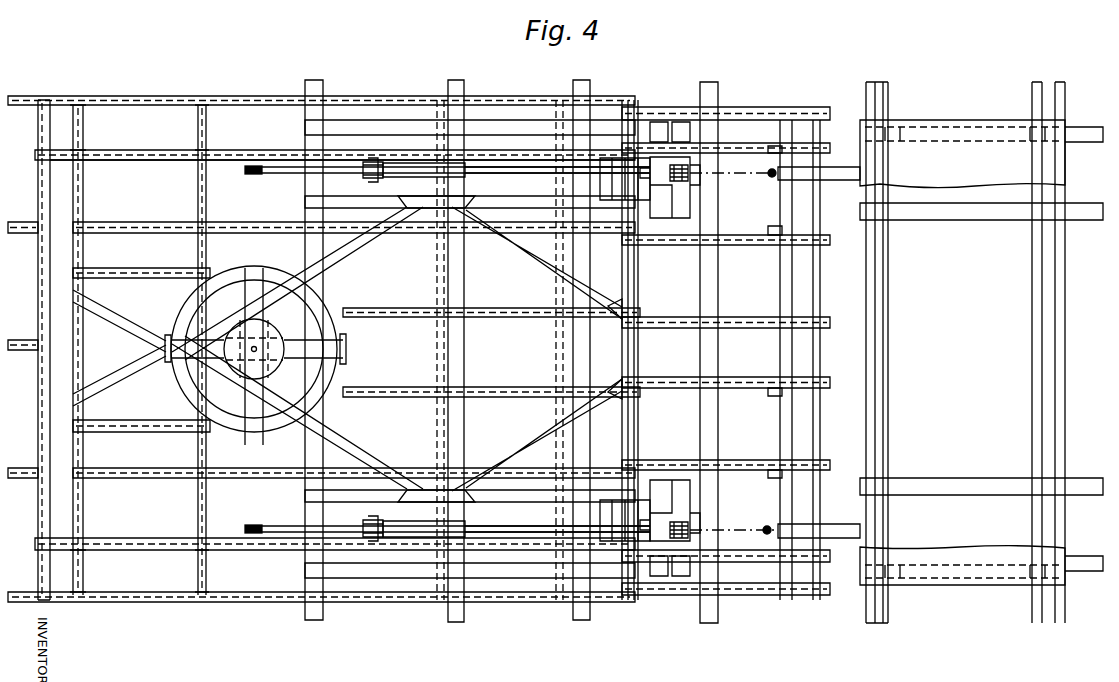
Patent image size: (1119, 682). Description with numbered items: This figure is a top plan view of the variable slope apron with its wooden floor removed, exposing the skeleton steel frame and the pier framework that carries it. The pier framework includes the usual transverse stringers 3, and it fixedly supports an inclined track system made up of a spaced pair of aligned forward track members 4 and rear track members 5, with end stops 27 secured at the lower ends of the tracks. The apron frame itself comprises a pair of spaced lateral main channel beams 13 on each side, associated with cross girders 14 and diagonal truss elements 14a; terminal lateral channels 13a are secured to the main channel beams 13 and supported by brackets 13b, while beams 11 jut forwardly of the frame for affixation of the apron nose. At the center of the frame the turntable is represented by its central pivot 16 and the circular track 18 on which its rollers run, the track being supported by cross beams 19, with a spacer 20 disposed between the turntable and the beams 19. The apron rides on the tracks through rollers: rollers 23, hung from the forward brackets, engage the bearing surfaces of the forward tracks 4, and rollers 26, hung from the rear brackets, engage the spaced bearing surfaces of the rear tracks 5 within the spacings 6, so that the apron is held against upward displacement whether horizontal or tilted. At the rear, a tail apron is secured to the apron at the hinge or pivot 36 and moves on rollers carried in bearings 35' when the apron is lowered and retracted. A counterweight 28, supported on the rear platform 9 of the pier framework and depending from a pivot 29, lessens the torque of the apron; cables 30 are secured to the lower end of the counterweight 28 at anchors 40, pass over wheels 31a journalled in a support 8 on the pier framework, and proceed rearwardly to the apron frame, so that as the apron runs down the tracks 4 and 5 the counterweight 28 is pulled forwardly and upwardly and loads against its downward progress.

The transverse stringers 3 is at (450, 615).
The forward track members 4 is at (285, 173).
The rear track members 5 is at (505, 170).
The spacings 6 is at (362, 495).
The support 8 is at (690, 193).
The rear platform 9 is at (960, 603).
The beams 11 is at (13, 222).
The main channel beams 13 is at (135, 160).
The terminal lateral channels 13a is at (165, 96).
The brackets 13b is at (200, 133).
The cross girders 14 is at (205, 250).
The truss elements 14a is at (522, 258).
The central pivot 16 is at (257, 346).
The circular track 18 is at (325, 315).
The cross beams 19 is at (346, 348).
The spacer 20 is at (240, 326).
The rollers 23 is at (378, 165).
The rollers 26 is at (610, 205).
The end stops 27 is at (255, 175).
The counterweight 28 is at (805, 500).
The pivot 29 is at (866, 455).
The cables 30 is at (758, 176).
The wheels 31a is at (688, 172).
The bearings 35' is at (765, 312).
The hinge or pivot 36 is at (638, 271).
The anchors 40 is at (774, 176).